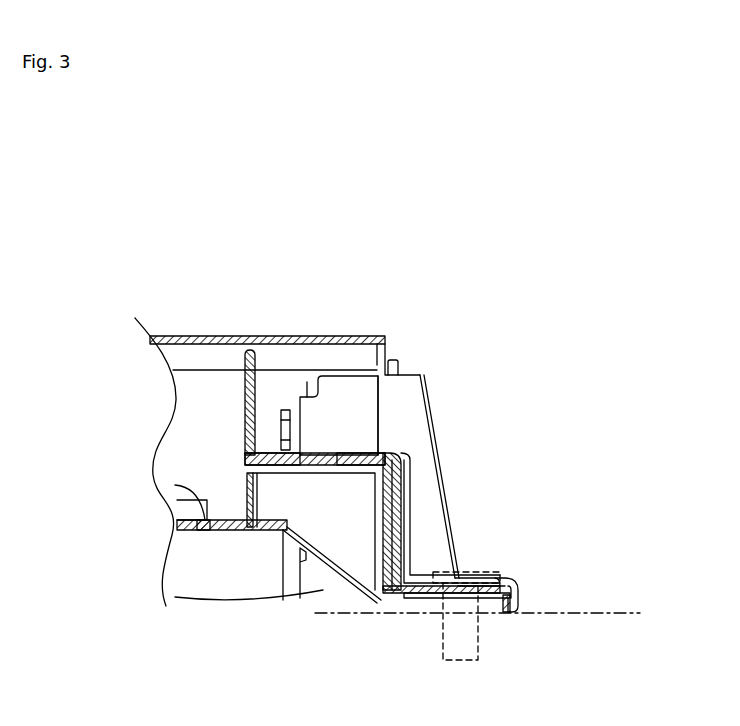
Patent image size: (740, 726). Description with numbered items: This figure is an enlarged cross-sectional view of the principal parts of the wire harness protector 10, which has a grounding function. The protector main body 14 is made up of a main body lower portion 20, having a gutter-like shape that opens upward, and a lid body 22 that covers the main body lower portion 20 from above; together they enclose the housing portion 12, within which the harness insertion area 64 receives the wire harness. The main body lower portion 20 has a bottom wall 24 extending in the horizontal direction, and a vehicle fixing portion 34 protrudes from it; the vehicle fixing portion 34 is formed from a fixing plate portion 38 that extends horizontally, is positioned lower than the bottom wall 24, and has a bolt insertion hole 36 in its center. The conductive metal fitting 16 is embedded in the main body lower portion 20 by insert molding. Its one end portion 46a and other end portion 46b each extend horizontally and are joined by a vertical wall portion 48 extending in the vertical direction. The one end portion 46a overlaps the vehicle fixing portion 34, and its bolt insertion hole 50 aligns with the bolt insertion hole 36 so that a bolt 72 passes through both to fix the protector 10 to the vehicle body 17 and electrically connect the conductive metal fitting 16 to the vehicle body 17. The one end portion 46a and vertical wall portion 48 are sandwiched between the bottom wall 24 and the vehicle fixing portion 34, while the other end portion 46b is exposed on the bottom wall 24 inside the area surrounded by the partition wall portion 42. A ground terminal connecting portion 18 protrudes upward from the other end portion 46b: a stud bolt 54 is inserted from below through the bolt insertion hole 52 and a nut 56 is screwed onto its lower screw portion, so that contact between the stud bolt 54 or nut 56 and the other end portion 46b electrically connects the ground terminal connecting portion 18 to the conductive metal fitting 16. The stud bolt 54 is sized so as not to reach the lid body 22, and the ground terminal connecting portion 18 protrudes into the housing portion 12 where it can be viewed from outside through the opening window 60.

The wire harness protector 10 is at (570, 279).
The housing portion 12 is at (163, 420).
The harness insertion area 64 is at (189, 500).
The protector main body 14 is at (341, 456).
The lid body 22 is at (400, 347).
The main body lower portion 20 is at (447, 431).
The partition wall portion 42 is at (250, 392).
The ground terminal connecting portion 18 is at (310, 368).
The stud bolt 54 is at (313, 433).
The nut 56 is at (298, 458).
The other end portion 46b is at (247, 458).
The bolt insertion hole 52 is at (333, 455).
The opening window 60 is at (400, 434).
The vertical wall portion 48 is at (398, 520).
The conductive metal fitting 16 is at (410, 507).
The one end portion 46a is at (428, 598).
The bolt insertion hole 50 is at (450, 598).
The bolt 72 is at (472, 570).
The vehicle fixing portion 34 is at (530, 572).
The bolt insertion hole 36 is at (495, 585).
The fixing plate portion 38 is at (510, 612).
The vehicle body 17 is at (605, 630).
The bottom wall 24 is at (200, 530).